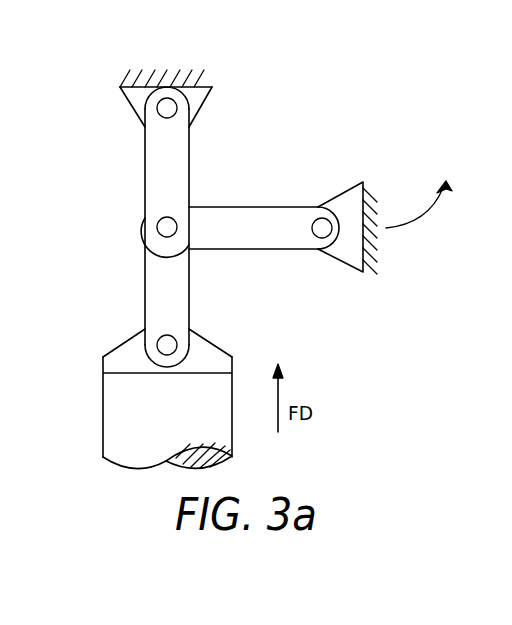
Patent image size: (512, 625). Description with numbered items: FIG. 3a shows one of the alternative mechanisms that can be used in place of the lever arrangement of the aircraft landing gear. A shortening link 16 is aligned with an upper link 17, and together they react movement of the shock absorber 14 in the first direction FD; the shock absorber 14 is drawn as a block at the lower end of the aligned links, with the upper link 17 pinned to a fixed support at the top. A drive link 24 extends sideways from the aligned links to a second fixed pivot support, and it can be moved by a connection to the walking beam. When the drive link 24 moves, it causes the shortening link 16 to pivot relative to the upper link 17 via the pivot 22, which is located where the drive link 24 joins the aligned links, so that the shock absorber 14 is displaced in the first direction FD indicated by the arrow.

The shock absorber 14 is at (109, 403).
The shortening link 16 is at (152, 285).
The upper link 17 is at (152, 167).
The pivot 22 is at (156, 225).
The drive link 24 is at (265, 213).